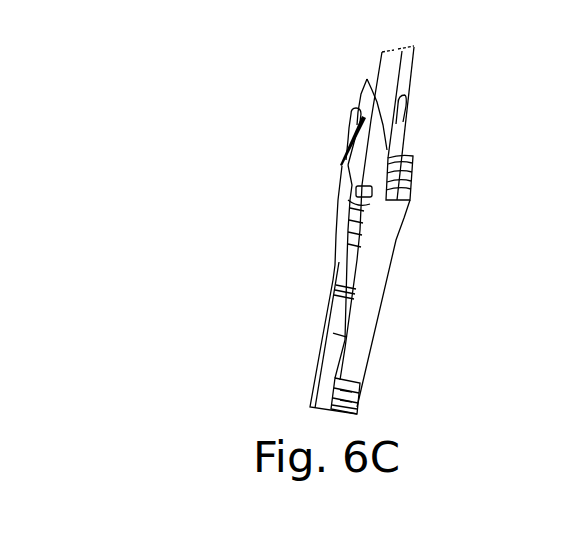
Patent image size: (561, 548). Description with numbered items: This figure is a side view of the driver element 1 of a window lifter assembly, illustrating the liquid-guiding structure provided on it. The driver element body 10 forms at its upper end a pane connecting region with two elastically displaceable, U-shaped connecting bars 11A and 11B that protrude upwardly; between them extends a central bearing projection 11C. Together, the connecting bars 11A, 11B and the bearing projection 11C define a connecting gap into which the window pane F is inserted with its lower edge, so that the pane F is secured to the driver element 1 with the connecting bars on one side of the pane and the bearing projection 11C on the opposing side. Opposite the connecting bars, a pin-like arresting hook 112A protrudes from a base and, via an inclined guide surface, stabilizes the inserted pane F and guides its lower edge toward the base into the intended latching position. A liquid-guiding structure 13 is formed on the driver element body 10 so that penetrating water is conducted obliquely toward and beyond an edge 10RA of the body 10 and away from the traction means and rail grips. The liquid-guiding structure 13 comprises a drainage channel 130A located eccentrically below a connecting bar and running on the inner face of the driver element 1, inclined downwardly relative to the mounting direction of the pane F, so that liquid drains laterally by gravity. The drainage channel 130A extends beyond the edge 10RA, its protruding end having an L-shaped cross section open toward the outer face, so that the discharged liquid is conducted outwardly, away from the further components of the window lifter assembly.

The driver element 1 is at (445, 162).
The window pane F is at (392, 67).
The connecting bar 11A is at (353, 144).
The connecting bar 11B is at (361, 94).
The bearing projection 11C is at (405, 103).
The arresting hook 112A is at (402, 188).
The liquid-guiding structure 13 is at (318, 268).
The drainage channel 130A is at (337, 289).
The driver element body 10 is at (362, 357).
The edge 10RA is at (327, 375).